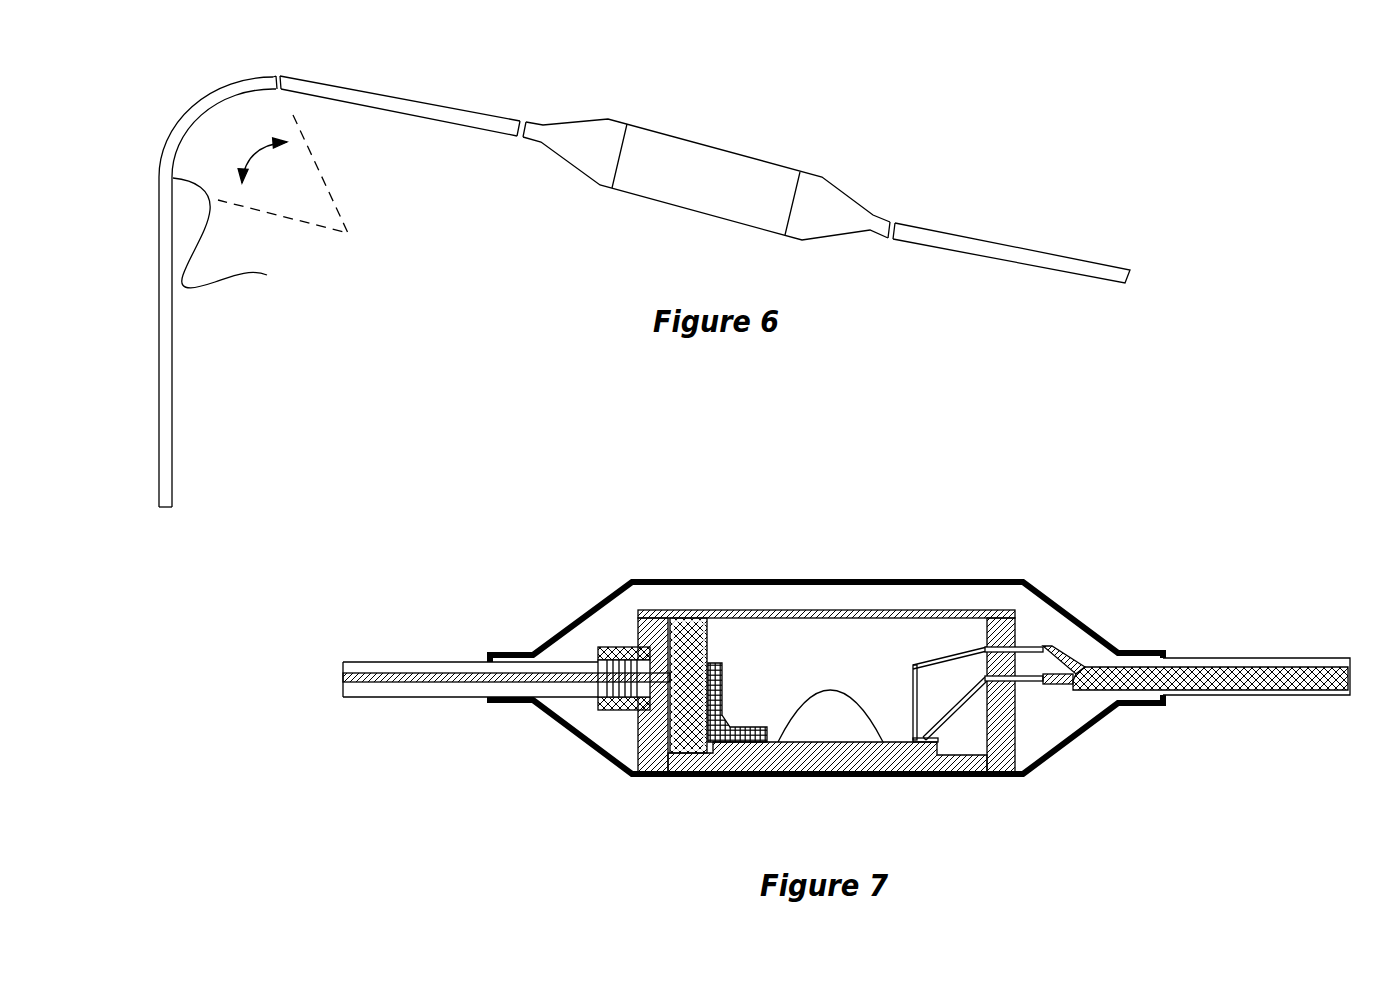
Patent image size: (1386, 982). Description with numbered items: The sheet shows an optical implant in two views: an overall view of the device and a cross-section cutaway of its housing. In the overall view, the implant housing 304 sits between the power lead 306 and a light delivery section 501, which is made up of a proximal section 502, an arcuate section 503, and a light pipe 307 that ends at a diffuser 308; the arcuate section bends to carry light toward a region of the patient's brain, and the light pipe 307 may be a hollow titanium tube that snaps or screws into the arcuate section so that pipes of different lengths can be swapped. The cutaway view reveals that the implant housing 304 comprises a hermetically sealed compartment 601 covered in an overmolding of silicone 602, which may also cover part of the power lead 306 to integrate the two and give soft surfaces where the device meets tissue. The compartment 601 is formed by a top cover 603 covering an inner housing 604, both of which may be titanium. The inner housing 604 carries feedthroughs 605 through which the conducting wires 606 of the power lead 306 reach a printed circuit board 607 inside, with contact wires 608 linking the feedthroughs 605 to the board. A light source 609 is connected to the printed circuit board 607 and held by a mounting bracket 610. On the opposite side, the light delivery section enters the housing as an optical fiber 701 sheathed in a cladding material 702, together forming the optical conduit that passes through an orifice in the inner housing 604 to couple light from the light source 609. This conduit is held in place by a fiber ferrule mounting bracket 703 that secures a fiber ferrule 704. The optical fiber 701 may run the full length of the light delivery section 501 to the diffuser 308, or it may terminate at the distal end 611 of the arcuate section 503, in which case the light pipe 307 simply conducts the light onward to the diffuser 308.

In FIG. 6, the implant housing 304 is at (775, 151).
In FIG. 7, the implant housing 304 is at (790, 553).
In FIG. 6, the power lead 306 is at (1057, 270).
In FIG. 7, the power lead 306 is at (1215, 636).
In FIG. 6, the light pipe 307 is at (172, 362).
In FIG. 6, the diffuser 308 is at (172, 508).
In FIG. 6, the light delivery section 501 is at (445, 192).
In FIG. 6, the proximal section 502 is at (388, 98).
In FIG. 7, the proximal section 502 is at (376, 717).
In FIG. 6, the arcuate section 503 is at (222, 80).
In FIG. 7, the hermetically sealed compartment 601 is at (1038, 723).
In FIG. 7, the silicone 602 is at (613, 592).
In FIG. 7, the top cover 603 is at (887, 610).
In FIG. 7, the inner housing 604 is at (637, 740).
In FIG. 7, the feedthroughs 605 is at (1020, 642).
In FIG. 7, the conducting wires 606 is at (1080, 665).
In FIG. 7, the printed circuit board 607 is at (778, 742).
In FIG. 7, the contact wires 608 is at (980, 695).
In FIG. 7, the light source 609 is at (705, 632).
In FIG. 7, the mounting bracket 610 is at (730, 713).
In FIG. 6, the distal end 611 is at (260, 206).
In FIG. 7, the optical fiber 701 is at (463, 677).
In FIG. 7, the cladding material 702 is at (438, 666).
In FIG. 7, the fiber ferrule mounting bracket 703 is at (623, 707).
In FIG. 7, the fiber ferrule 704 is at (603, 687).